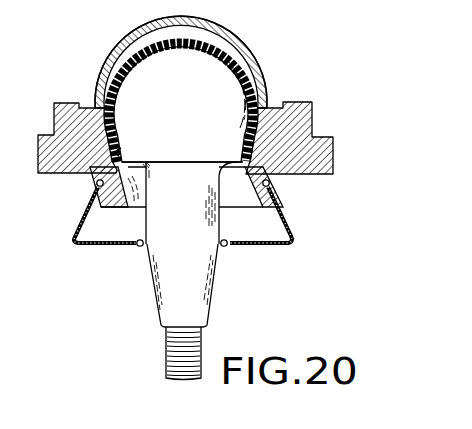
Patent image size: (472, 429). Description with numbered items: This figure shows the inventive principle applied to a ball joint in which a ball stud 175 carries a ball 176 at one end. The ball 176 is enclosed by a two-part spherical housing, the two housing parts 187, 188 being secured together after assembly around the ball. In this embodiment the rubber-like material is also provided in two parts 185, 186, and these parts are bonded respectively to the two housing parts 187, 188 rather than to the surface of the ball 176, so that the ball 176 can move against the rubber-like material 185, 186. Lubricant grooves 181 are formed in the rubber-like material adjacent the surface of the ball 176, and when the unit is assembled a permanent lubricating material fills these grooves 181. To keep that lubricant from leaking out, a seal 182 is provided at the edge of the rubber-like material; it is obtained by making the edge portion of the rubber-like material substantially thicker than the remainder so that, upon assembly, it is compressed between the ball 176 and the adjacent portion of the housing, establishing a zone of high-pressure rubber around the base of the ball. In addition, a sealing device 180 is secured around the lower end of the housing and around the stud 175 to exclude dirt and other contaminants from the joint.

The ball stud 175 is at (214, 281).
The ball 176 is at (181, 104).
The sealing device 180 is at (280, 212).
The lubricant grooves 181 is at (222, 42).
The seal 182 is at (99, 175).
The rubber-like material part 185 is at (188, 28).
The rubber-like material part 186 is at (98, 88).
The housing part 187 is at (249, 62).
The housing part 188 is at (304, 103).